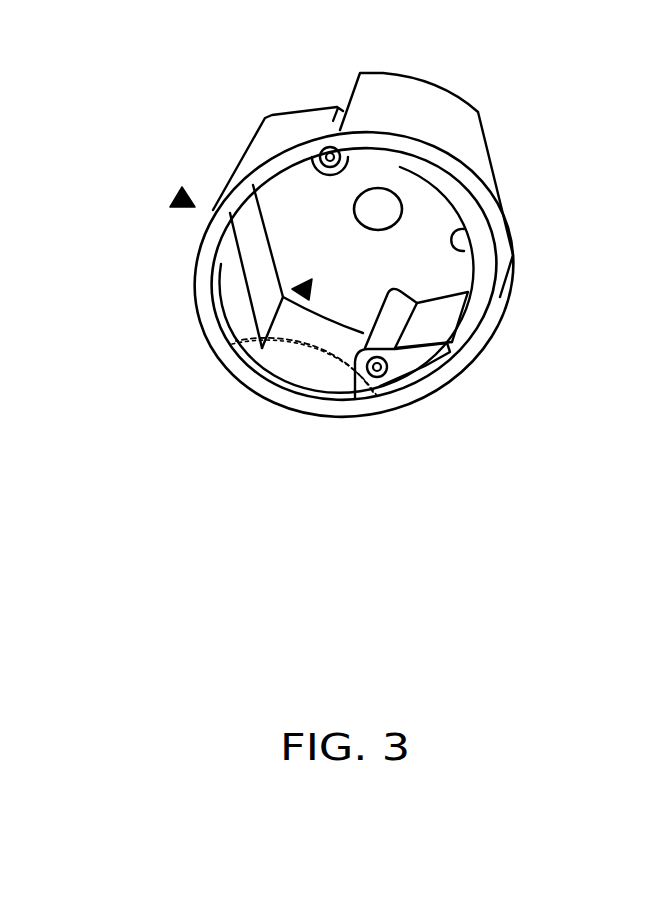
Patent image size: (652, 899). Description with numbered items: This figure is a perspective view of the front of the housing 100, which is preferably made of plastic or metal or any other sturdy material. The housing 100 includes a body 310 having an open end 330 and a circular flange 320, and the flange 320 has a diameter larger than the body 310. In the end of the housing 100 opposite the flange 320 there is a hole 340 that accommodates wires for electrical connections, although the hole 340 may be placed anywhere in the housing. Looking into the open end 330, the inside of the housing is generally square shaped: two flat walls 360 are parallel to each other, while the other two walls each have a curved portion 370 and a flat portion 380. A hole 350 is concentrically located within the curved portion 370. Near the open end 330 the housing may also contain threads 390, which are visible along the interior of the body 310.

The housing 100 is at (171, 198).
The body 310 is at (503, 203).
The circular flange 320 is at (197, 290).
The open end 330 is at (306, 290).
The hole 340 is at (383, 198).
The hole 350 is at (327, 151).
The flat walls 360 is at (458, 251).
The curved portion 370 is at (278, 357).
The flat portion 380 is at (450, 361).
The threads 390 is at (353, 398).